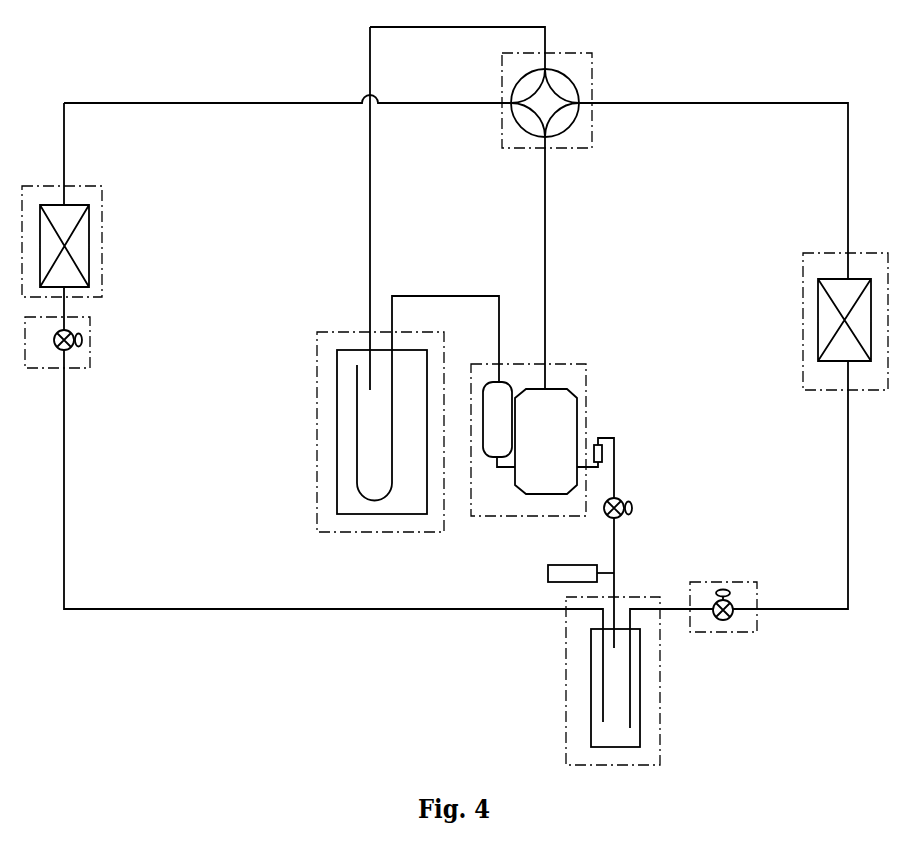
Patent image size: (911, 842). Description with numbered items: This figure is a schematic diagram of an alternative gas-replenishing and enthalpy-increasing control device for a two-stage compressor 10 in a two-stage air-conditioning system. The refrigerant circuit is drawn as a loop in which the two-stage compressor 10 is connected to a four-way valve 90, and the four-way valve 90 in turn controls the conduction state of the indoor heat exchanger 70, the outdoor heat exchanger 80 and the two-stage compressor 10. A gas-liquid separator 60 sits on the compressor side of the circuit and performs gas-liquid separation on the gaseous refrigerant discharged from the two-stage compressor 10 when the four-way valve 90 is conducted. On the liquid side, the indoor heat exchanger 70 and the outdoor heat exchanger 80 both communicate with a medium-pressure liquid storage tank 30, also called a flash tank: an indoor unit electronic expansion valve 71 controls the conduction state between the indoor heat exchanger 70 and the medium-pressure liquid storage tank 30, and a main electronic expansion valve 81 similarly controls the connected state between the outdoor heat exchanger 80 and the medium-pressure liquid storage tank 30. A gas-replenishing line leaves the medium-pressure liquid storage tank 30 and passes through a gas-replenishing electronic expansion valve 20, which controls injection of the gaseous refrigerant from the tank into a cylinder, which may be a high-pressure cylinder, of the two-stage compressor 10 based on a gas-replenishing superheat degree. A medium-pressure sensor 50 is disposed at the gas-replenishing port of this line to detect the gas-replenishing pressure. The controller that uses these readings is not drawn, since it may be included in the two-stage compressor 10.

The two-stage compressor 10 is at (605, 428).
The gas-replenishing electronic expansion valve 20 is at (704, 495).
The medium-pressure liquid storage tank 30 is at (531, 681).
The medium-pressure sensor 50 is at (503, 578).
The gas-liquid separator 60 is at (318, 414).
The indoor heat exchanger 70 is at (112, 241).
The indoor unit electronic expansion valve 71 is at (131, 359).
The outdoor heat exchanger 80 is at (789, 312).
The main electronic expansion valve 81 is at (757, 643).
The four-way valve 90 is at (611, 97).